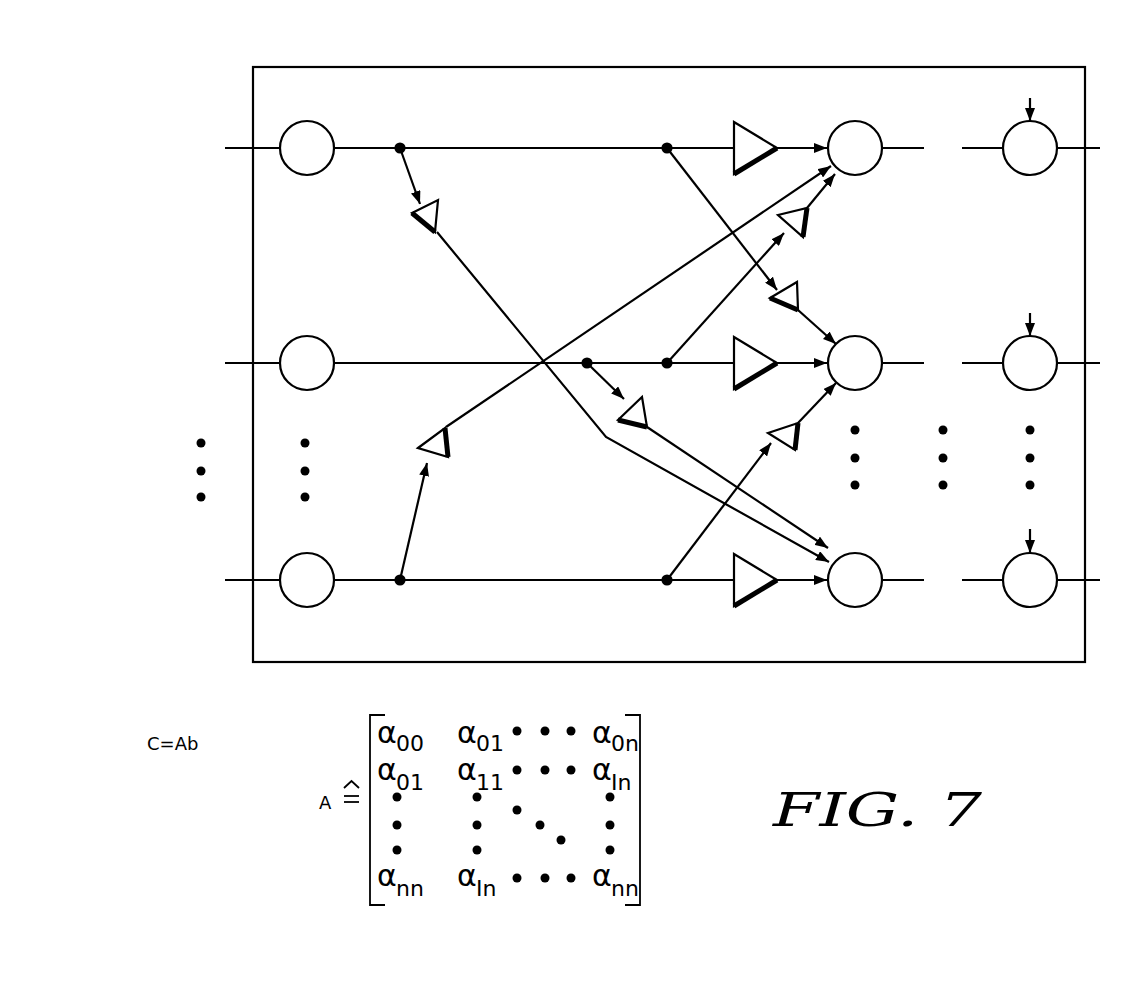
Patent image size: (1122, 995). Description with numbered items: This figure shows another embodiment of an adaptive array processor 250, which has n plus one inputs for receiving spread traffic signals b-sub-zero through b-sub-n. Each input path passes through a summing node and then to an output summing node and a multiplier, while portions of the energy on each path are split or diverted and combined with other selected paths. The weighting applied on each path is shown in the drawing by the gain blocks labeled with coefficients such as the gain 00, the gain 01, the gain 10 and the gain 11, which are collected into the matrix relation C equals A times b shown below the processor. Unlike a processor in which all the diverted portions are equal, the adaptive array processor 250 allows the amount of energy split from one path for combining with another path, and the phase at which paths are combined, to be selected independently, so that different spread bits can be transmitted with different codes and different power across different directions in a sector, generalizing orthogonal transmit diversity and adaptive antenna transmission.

The adaptive array processor 250 is at (1005, 67).
The amplifier alpha- 00 is at (780, 134).
The amplifier alpha- 01 is at (760, 268).
The amplifier alpha- 10 is at (757, 246).
The amplifier alpha- 11 is at (780, 377).